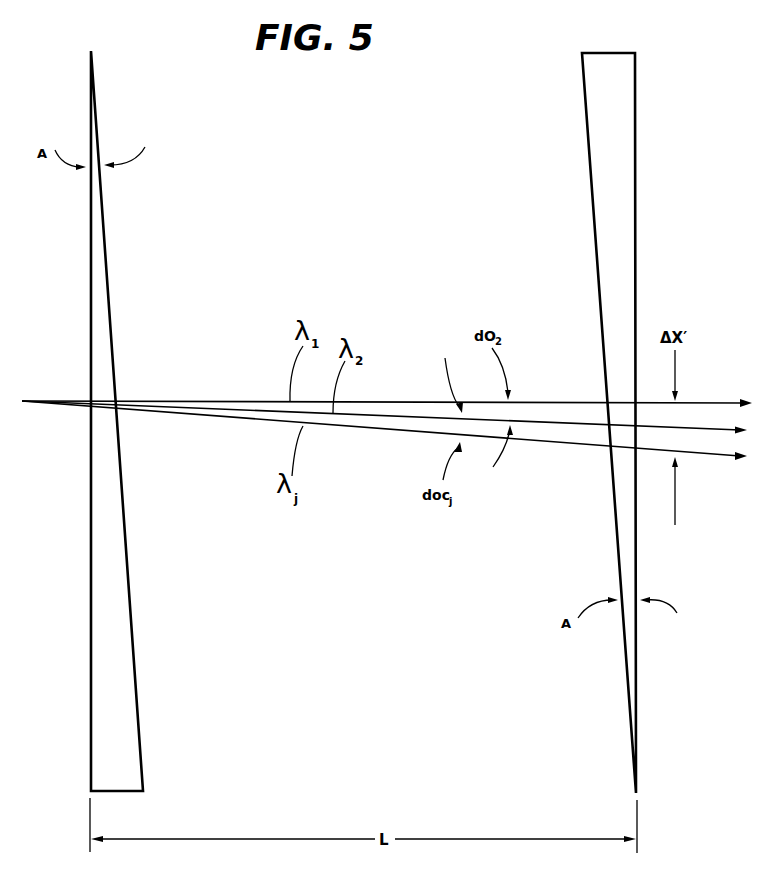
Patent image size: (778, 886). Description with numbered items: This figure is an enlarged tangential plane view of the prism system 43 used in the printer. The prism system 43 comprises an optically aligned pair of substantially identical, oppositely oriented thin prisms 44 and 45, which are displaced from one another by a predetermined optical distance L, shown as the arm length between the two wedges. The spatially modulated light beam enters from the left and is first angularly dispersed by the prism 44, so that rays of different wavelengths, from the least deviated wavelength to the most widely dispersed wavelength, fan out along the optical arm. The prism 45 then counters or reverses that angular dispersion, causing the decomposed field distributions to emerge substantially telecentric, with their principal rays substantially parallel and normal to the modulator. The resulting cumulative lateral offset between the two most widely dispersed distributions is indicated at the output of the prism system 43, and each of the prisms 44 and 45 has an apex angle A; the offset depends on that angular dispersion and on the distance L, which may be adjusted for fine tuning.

The prism system 43 is at (536, 104).
The prism 44 is at (102, 613).
The prism 45 is at (600, 187).